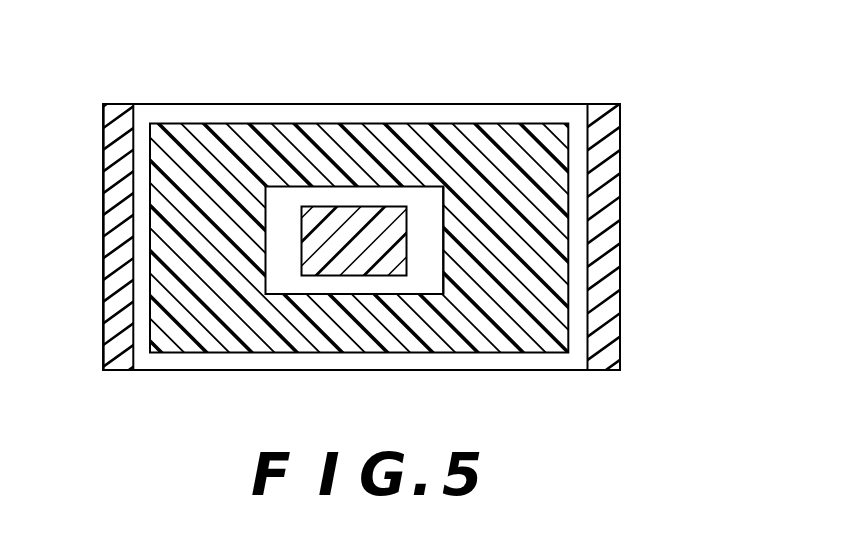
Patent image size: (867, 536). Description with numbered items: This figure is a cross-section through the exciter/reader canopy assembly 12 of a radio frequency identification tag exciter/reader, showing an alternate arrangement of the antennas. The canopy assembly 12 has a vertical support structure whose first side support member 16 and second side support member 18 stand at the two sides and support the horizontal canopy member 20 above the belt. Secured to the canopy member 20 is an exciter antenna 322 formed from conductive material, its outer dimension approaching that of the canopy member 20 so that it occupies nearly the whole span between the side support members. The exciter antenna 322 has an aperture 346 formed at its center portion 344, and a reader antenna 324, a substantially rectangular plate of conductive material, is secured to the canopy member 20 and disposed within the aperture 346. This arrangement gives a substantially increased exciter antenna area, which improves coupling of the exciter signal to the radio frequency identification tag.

The exciter/reader canopy assembly 12 is at (571, 90).
The first side support member 16 is at (608, 170).
The second side support member 18 is at (118, 145).
The horizontal canopy member 20 is at (523, 118).
The exciter antenna 322 is at (288, 145).
The reader antenna 324 is at (343, 267).
The center portion 344 is at (421, 197).
The aperture 346 is at (443, 262).